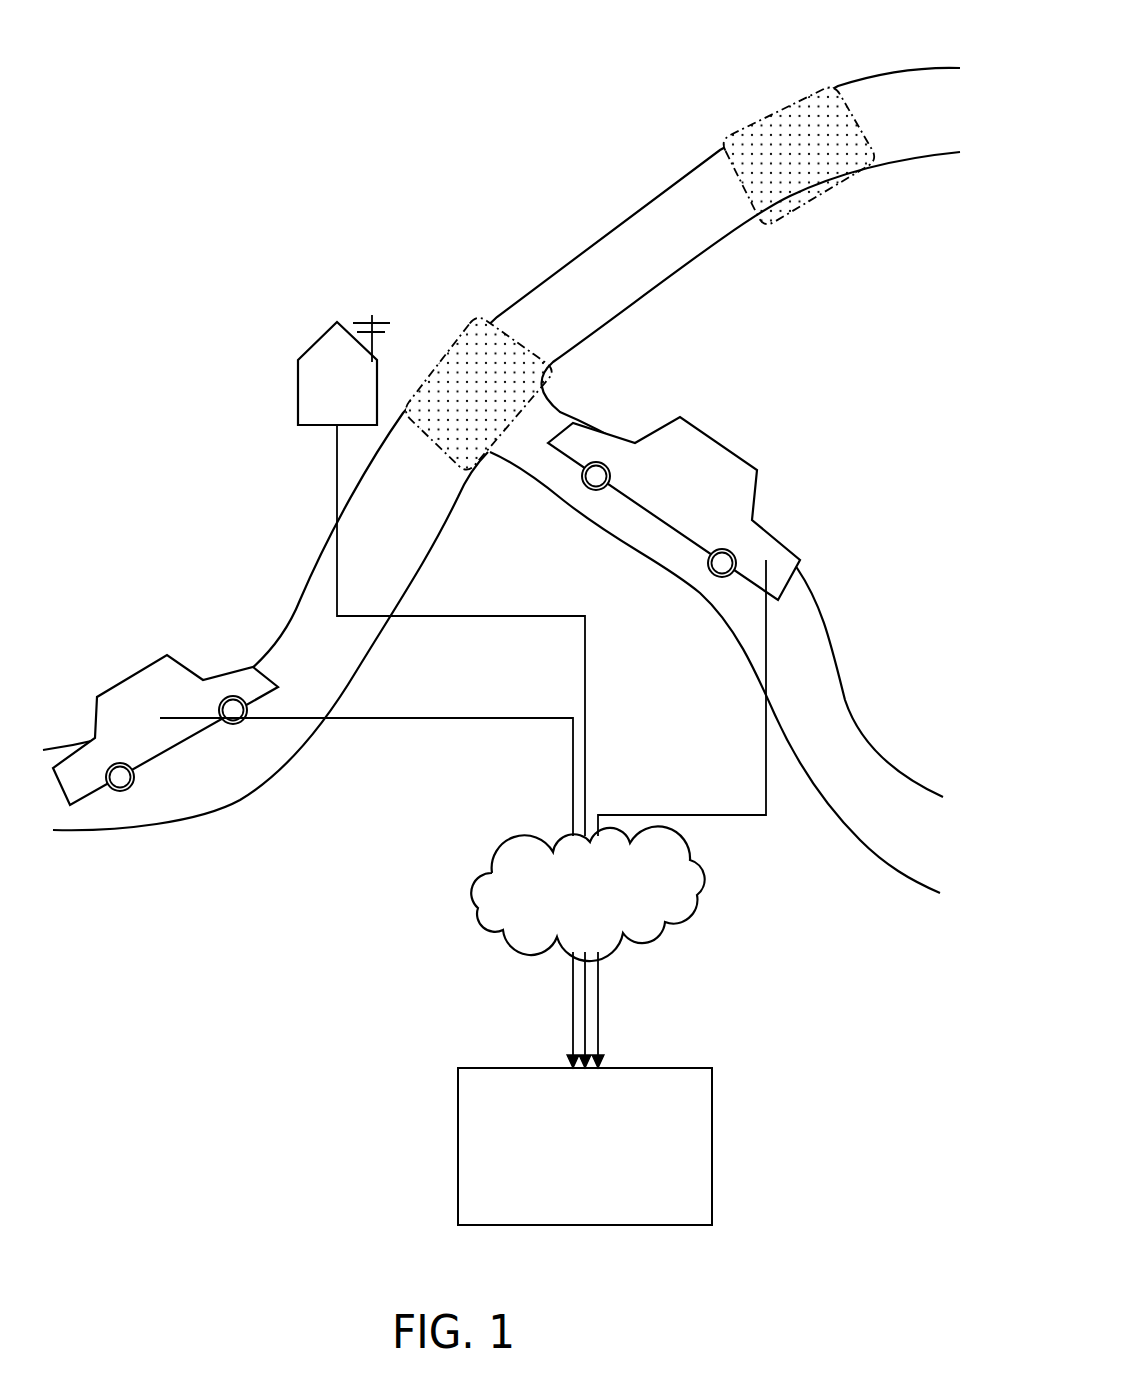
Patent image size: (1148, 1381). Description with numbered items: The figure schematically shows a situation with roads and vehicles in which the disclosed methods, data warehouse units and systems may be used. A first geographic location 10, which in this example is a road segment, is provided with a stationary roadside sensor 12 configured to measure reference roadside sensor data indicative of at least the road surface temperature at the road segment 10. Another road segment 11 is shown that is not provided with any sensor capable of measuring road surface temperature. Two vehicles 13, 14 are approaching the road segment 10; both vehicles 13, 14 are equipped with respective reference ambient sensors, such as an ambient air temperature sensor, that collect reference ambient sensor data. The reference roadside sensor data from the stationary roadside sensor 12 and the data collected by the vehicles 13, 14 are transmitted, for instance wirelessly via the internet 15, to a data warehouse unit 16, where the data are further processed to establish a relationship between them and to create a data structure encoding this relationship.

The first geographic location 10 is at (487, 308).
The road segment 11 is at (711, 136).
The stationary roadside sensor 12 is at (283, 377).
The vehicle 13 is at (752, 442).
The vehicle 14 is at (159, 648).
The internet 15 is at (430, 898).
The data warehouse unit 16 is at (430, 1148).